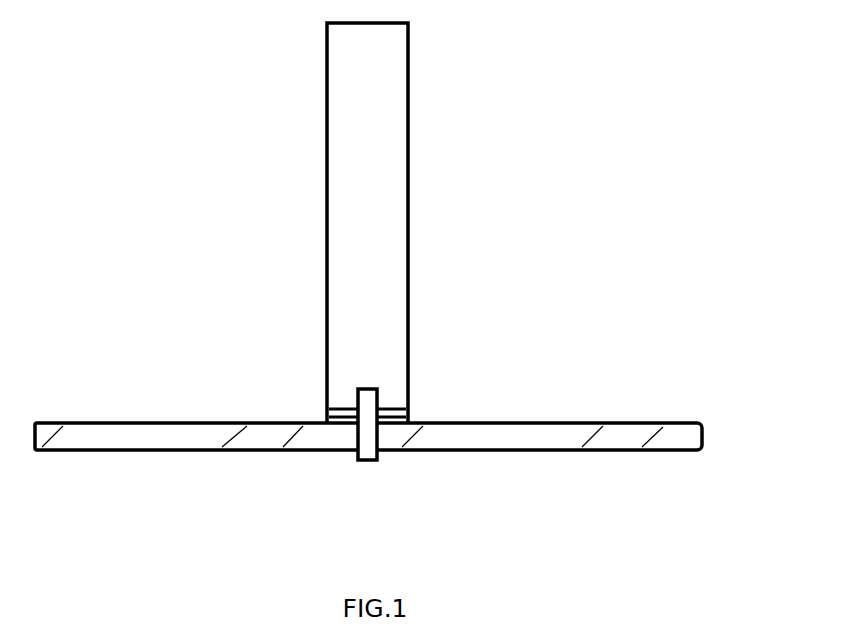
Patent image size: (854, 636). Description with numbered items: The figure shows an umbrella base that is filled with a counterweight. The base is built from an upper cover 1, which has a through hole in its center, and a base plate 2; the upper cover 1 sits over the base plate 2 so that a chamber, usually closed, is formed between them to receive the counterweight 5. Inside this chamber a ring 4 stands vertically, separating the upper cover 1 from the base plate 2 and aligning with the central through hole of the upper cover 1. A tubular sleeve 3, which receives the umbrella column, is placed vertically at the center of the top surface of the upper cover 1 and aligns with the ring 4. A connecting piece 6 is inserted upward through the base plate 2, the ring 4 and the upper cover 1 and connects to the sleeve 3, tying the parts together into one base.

The upper cover 1 is at (568, 423).
The base plate 2 is at (542, 450).
The sleeve 3 is at (408, 213).
The ring 4 is at (377, 436).
The counterweight 5 is at (665, 433).
The connecting piece 6 is at (365, 460).